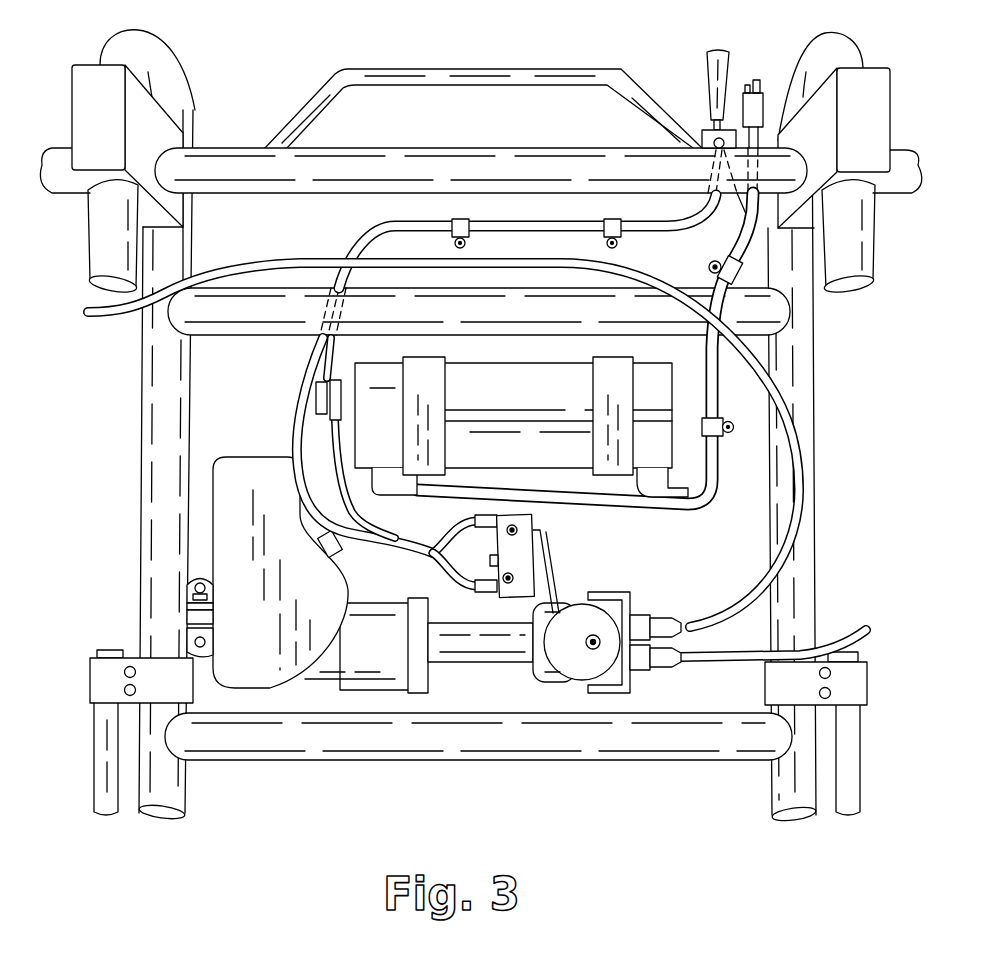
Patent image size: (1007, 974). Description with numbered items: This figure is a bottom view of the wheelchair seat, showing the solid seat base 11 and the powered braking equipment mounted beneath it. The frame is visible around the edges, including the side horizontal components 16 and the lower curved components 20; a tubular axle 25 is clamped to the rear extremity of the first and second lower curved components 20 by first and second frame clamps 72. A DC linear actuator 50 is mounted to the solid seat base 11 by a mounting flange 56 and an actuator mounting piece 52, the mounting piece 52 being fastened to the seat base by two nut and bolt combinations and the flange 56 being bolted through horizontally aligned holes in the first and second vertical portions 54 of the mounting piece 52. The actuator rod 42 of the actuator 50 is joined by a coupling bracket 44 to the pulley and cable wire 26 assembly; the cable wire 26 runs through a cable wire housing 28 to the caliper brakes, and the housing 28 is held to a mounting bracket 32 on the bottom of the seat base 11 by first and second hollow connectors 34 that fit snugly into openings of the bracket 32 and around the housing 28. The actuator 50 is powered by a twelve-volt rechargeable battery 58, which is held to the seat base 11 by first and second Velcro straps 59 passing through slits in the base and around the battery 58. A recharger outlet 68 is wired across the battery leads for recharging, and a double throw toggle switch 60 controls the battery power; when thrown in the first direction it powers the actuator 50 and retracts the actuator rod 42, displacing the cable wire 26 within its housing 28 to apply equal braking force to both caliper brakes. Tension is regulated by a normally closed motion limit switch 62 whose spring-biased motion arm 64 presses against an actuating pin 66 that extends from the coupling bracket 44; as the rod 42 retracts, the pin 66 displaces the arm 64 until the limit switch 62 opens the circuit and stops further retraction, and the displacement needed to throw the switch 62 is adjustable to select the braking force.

The solid seat base 11 is at (228, 417).
The side horizontal component 16 is at (145, 378).
The lower curved component 20 is at (124, 251).
The tubular axle 25 is at (476, 148).
The cable wire 26 is at (614, 600).
The cable wire housing 28 is at (125, 322).
The mounting bracket 32 is at (633, 602).
The hollow connectors 34 is at (664, 618).
The actuator rod 42 is at (497, 665).
The coupling bracket 44 is at (565, 612).
The DC linear actuator 50 is at (312, 592).
The actuator mounting piece 52 is at (198, 580).
The vertical portions 54 is at (190, 616).
The mounting flange 56 is at (205, 615).
The twelve-volt rechargeable battery 58 is at (502, 454).
The Velcro straps 59 is at (437, 392).
The double throw toggle switch 60 is at (712, 52).
The motion limit switch 62 is at (530, 566).
The motion arm 64 is at (555, 558).
The actuating pin 66 is at (573, 676).
The recharger outlet 68 is at (758, 80).
The frame clamps 72 is at (110, 131).